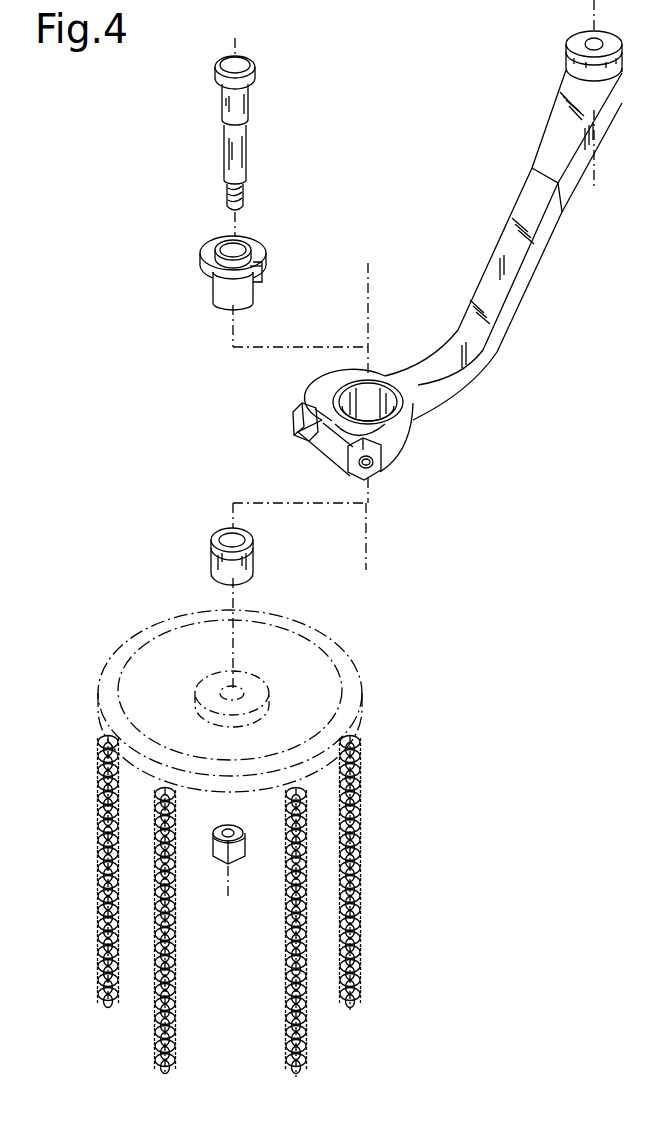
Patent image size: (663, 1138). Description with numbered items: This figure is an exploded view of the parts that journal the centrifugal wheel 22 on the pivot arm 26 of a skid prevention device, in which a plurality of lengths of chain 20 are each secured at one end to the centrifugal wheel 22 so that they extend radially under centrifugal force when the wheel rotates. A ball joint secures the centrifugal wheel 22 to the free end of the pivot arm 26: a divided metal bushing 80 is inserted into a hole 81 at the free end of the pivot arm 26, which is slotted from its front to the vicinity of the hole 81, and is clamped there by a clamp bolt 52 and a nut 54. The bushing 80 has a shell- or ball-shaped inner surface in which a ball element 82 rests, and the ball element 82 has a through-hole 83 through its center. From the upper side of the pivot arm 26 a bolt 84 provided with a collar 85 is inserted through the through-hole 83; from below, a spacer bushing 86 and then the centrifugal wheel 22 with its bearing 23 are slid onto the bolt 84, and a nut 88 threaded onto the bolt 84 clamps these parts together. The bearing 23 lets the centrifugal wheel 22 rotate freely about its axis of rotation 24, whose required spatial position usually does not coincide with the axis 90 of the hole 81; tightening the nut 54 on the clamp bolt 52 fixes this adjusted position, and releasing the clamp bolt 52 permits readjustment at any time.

The lengths of chain 20 is at (98, 858).
The centrifugal wheel 22 is at (316, 634).
The bearing 23 is at (257, 691).
The axis of rotation 24 is at (237, 33).
The pivot arm 26 is at (520, 295).
The clamp bolt 52 is at (296, 424).
The nut 54 is at (340, 463).
The divided metal bushing 80 is at (202, 262).
The hole 81 is at (388, 407).
The ball element 82 is at (258, 278).
The through-hole 83 is at (245, 251).
The bolt 84 is at (230, 152).
The collar 85 is at (254, 75).
The spacer bushing 86 is at (222, 563).
The nut 88 is at (226, 857).
The axis of the hole 90 is at (370, 278).